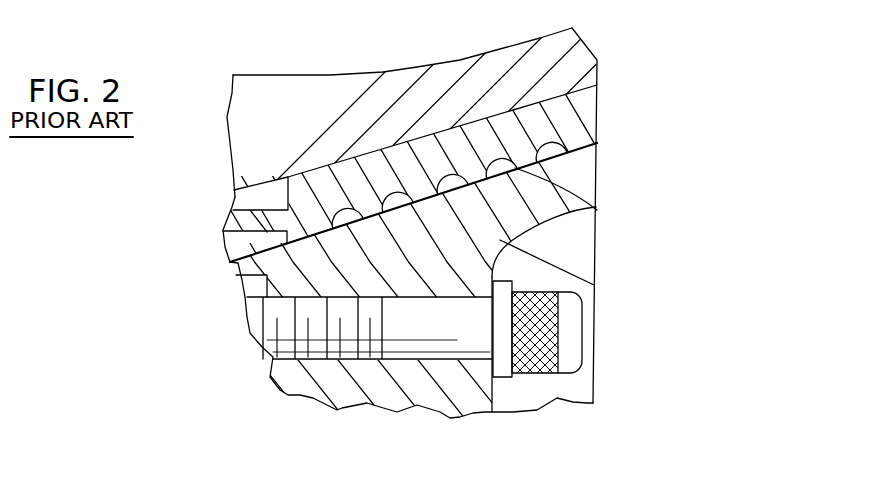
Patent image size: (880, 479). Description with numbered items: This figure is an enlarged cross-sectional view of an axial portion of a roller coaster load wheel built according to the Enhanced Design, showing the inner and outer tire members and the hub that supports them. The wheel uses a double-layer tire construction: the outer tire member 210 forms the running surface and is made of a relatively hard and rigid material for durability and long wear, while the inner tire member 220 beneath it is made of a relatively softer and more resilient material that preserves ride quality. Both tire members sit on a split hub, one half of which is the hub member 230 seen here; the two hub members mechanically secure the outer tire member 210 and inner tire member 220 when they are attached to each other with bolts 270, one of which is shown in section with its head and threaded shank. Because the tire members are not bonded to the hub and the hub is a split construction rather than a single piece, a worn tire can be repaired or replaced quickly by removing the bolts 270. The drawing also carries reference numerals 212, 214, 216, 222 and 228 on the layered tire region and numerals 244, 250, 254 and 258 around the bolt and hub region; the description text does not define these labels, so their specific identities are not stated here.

The outer tire member 210 is at (617, 75).
The edge 212 is at (600, 62).
The notch 214 is at (288, 180).
The outer layer 216 is at (421, 63).
The inner tire member 220 is at (612, 113).
The interface line 222 is at (597, 163).
The cavity wall 228 is at (597, 210).
The hub member 230 is at (583, 235).
The bolt 244 is at (265, 276).
The surface 250 is at (594, 285).
The block 254 is at (255, 263).
The washer 258 is at (459, 300).
The bolt 270 is at (582, 330).